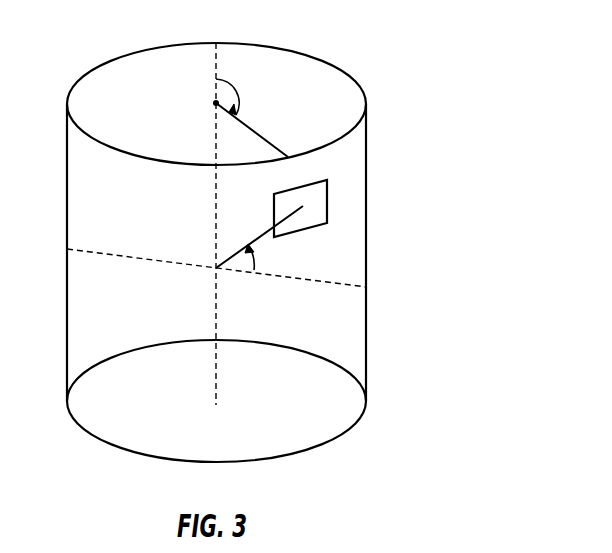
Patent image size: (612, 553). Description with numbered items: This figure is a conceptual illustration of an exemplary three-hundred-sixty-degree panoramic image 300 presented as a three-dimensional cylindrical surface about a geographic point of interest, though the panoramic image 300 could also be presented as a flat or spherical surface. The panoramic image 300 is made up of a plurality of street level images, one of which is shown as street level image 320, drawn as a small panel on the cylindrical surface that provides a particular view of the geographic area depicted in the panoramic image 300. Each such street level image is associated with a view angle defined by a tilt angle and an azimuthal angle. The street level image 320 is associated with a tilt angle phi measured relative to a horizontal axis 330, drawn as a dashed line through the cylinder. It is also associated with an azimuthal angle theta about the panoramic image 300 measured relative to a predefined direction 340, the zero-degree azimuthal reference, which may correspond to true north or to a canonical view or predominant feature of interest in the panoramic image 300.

The panoramic image 300 is at (366, 168).
The street level image 320 is at (320, 206).
The horizontal axis 330 is at (330, 283).
The predefined direction 340 is at (217, 60).